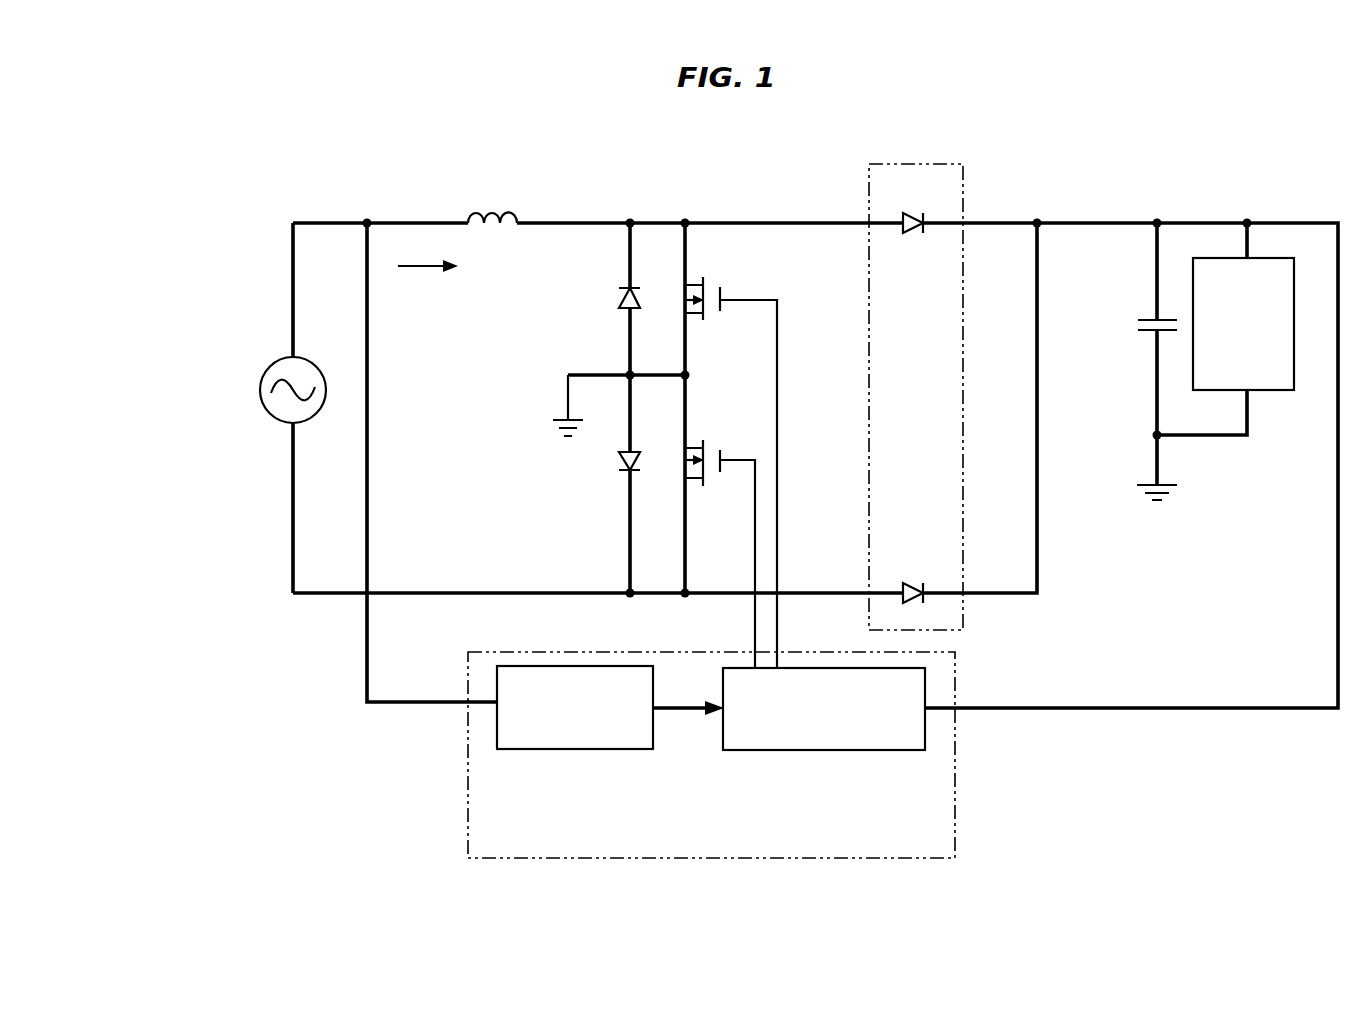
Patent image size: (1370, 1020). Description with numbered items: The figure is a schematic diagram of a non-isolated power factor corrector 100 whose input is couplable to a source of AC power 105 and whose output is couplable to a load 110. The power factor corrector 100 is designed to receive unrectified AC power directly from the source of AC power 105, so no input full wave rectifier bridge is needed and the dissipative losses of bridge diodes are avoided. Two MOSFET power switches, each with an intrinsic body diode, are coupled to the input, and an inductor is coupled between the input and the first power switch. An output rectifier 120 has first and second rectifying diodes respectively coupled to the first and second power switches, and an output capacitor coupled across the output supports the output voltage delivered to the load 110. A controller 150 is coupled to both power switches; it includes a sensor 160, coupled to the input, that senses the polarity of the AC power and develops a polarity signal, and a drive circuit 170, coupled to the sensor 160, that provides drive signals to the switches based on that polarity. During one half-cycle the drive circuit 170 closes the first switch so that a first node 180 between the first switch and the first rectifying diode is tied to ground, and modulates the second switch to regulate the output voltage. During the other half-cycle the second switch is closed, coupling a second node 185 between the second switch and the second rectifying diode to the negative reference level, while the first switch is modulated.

The non-isolated power factor corrector 100 is at (615, 143).
The source of AC power 105 is at (263, 374).
The load 110 is at (1277, 390).
The output rectifier 120 is at (869, 215).
The controller 150 is at (755, 858).
The sensor 160 is at (607, 749).
The drive circuit 170 is at (809, 750).
The first node 180 is at (686, 221).
The second node 185 is at (685, 597).